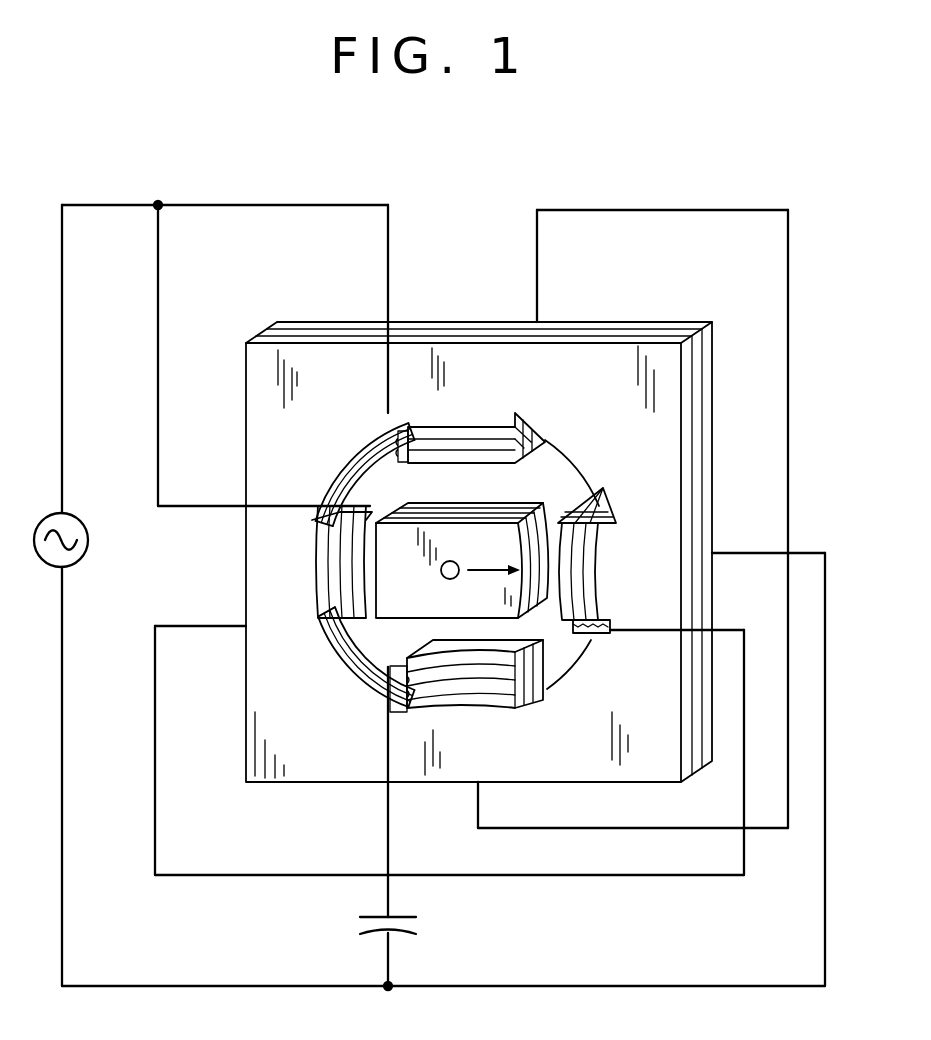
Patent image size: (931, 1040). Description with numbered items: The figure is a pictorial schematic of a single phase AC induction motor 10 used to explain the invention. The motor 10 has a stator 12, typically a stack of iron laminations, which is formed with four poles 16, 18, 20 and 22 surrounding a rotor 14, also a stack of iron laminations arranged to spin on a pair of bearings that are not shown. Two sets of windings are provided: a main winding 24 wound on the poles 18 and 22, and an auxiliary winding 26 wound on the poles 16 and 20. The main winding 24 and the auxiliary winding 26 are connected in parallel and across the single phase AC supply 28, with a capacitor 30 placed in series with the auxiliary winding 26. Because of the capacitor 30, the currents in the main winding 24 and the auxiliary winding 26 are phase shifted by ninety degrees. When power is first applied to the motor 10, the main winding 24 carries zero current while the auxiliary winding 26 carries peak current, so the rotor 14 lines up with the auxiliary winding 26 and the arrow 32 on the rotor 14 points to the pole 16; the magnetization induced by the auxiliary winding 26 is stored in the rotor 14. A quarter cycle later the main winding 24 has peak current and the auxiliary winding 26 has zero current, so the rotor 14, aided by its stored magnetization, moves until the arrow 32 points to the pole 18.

The single phase AC induction motor 10 is at (806, 323).
The stator 12 is at (570, 333).
The rotor 14 is at (493, 505).
The pole 16 is at (455, 652).
The pole 18 is at (358, 672).
The pole 20 is at (445, 466).
The pole 22 is at (553, 605).
The main winding 24 is at (353, 464).
The auxiliary winding 26 is at (428, 427).
The single phase AC supply 28 is at (85, 543).
The capacitor 30 is at (410, 917).
The arrow 32 is at (505, 577).